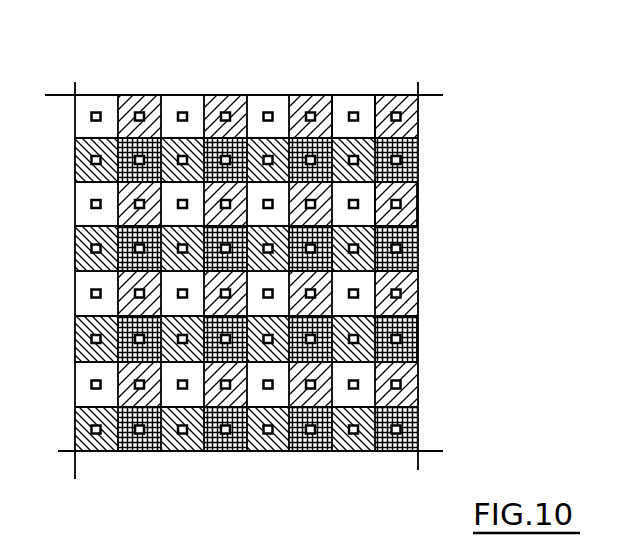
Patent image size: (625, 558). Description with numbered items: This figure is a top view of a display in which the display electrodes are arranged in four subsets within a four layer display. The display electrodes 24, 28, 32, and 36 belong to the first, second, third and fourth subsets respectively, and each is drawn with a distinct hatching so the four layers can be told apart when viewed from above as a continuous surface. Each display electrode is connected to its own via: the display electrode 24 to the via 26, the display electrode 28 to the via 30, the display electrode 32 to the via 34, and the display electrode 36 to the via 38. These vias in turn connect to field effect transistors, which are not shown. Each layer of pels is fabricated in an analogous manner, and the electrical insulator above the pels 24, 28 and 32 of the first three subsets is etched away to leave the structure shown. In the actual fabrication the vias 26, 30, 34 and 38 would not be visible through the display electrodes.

The display electrode 24 is at (342, 100).
The via 26 is at (358, 110).
The display electrode 28 is at (403, 215).
The via 30 is at (399, 199).
The display electrode 32 is at (375, 273).
The via 34 is at (357, 249).
The display electrode 36 is at (410, 355).
The via 38 is at (400, 334).